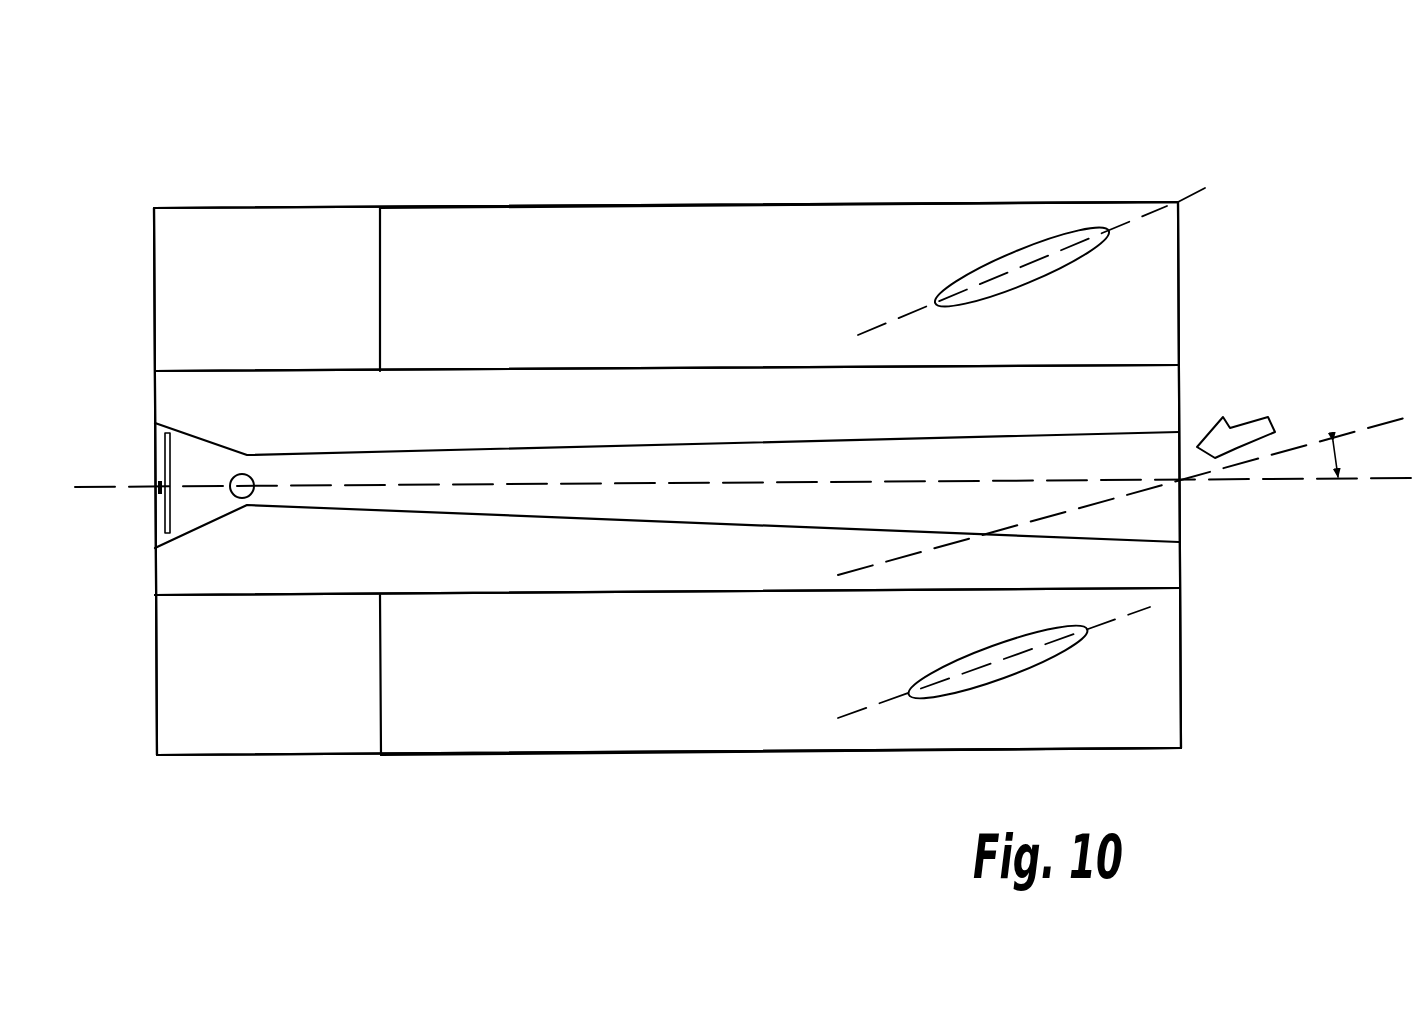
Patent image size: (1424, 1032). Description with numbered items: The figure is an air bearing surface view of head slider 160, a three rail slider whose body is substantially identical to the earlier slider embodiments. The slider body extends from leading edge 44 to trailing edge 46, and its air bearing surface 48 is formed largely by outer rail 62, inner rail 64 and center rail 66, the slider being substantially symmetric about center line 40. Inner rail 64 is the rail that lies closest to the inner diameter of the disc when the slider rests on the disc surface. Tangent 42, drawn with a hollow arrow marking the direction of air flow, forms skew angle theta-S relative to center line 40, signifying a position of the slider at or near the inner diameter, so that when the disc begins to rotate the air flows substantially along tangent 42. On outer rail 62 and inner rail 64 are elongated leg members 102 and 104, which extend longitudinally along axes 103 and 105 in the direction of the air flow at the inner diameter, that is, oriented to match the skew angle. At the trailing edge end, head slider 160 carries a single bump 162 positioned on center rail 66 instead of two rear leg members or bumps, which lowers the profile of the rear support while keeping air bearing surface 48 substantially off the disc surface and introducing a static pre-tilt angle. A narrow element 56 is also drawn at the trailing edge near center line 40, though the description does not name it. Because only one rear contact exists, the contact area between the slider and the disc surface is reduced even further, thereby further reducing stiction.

The center line 40 is at (1395, 478).
The tangent 42 is at (1387, 421).
The leading edge 44 is at (1181, 665).
The trailing edge 46 is at (155, 388).
The air bearing surface 48 is at (478, 716).
The sensing element 56 is at (155, 478).
The outer rail 62 is at (529, 218).
The inner rail 64 is at (700, 735).
The center rail 66 is at (682, 505).
The leg member 102 is at (1005, 298).
The axis 103 is at (1157, 210).
The leg member 104 is at (995, 690).
The axis 105 is at (1107, 622).
The head slider 160 is at (1056, 170).
The bump 162 is at (250, 477).